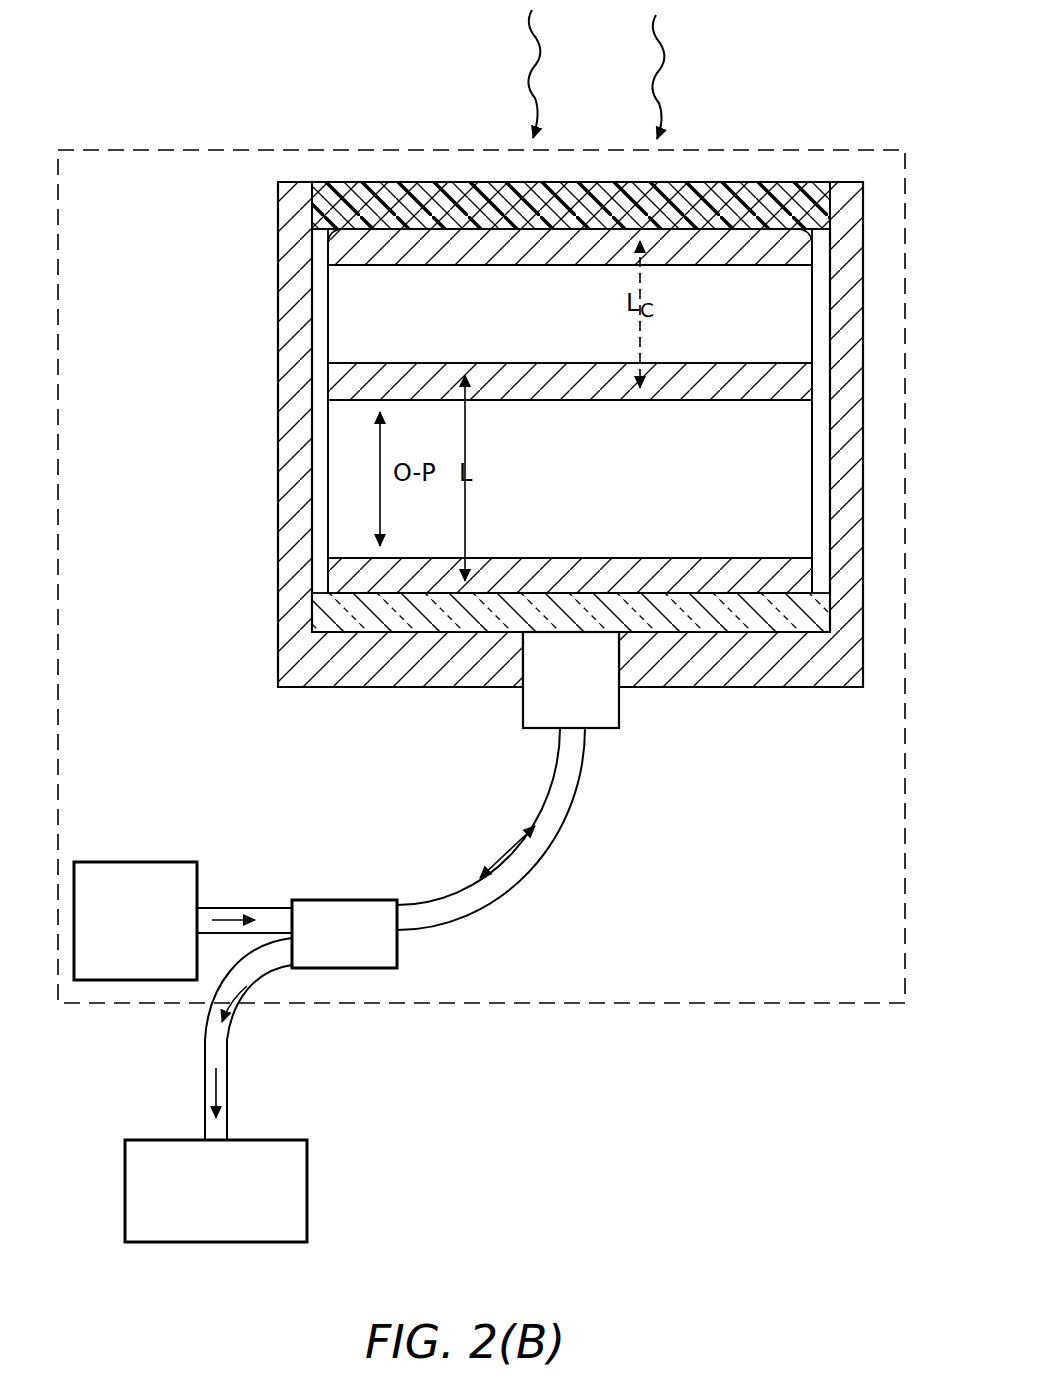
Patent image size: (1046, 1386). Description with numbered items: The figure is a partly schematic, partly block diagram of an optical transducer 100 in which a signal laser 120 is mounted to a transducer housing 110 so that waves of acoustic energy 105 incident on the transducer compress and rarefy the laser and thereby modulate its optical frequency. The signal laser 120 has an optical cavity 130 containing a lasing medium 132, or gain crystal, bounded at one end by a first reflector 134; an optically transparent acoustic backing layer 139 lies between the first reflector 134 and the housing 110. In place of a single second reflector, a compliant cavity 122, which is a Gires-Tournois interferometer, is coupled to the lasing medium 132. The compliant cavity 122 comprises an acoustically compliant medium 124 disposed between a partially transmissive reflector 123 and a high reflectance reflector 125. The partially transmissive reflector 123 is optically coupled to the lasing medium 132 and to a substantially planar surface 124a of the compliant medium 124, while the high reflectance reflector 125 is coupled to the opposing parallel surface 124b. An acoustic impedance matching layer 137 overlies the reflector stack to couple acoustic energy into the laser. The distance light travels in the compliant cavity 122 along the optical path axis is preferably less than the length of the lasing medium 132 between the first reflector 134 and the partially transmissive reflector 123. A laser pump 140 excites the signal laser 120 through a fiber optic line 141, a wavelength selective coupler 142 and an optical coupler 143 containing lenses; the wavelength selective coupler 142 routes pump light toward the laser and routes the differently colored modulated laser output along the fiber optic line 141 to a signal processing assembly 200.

The optical transducer 100 is at (260, 150).
The waves of acoustic energy 105 is at (531, 70).
The transducer housing 110 is at (290, 664).
The signal laser 120 is at (843, 400).
The compliant cavity 122 is at (320, 313).
The partially transmissive reflector 123 is at (338, 381).
The acoustically compliant medium 124 is at (344, 286).
The substantially planar surface of the acoustically compliant medium 124a is at (708, 367).
The planar surface of the acoustically compliant medium 124b is at (708, 262).
The high reflectance reflector 125 is at (328, 245).
The optical cavity 130 is at (726, 473).
The lasing medium 132 is at (326, 495).
The first reflector 134 is at (336, 571).
The acoustic impedance matching layer 137 is at (312, 197).
The optically transparent acoustic backing layer 139 is at (754, 628).
The laser pump 140 is at (132, 862).
The fiber optic line 141 is at (522, 872).
The wavelength selective coupler 142 is at (363, 900).
The optical coupler 143 is at (616, 734).
The signal processing assembly 200 is at (308, 1162).